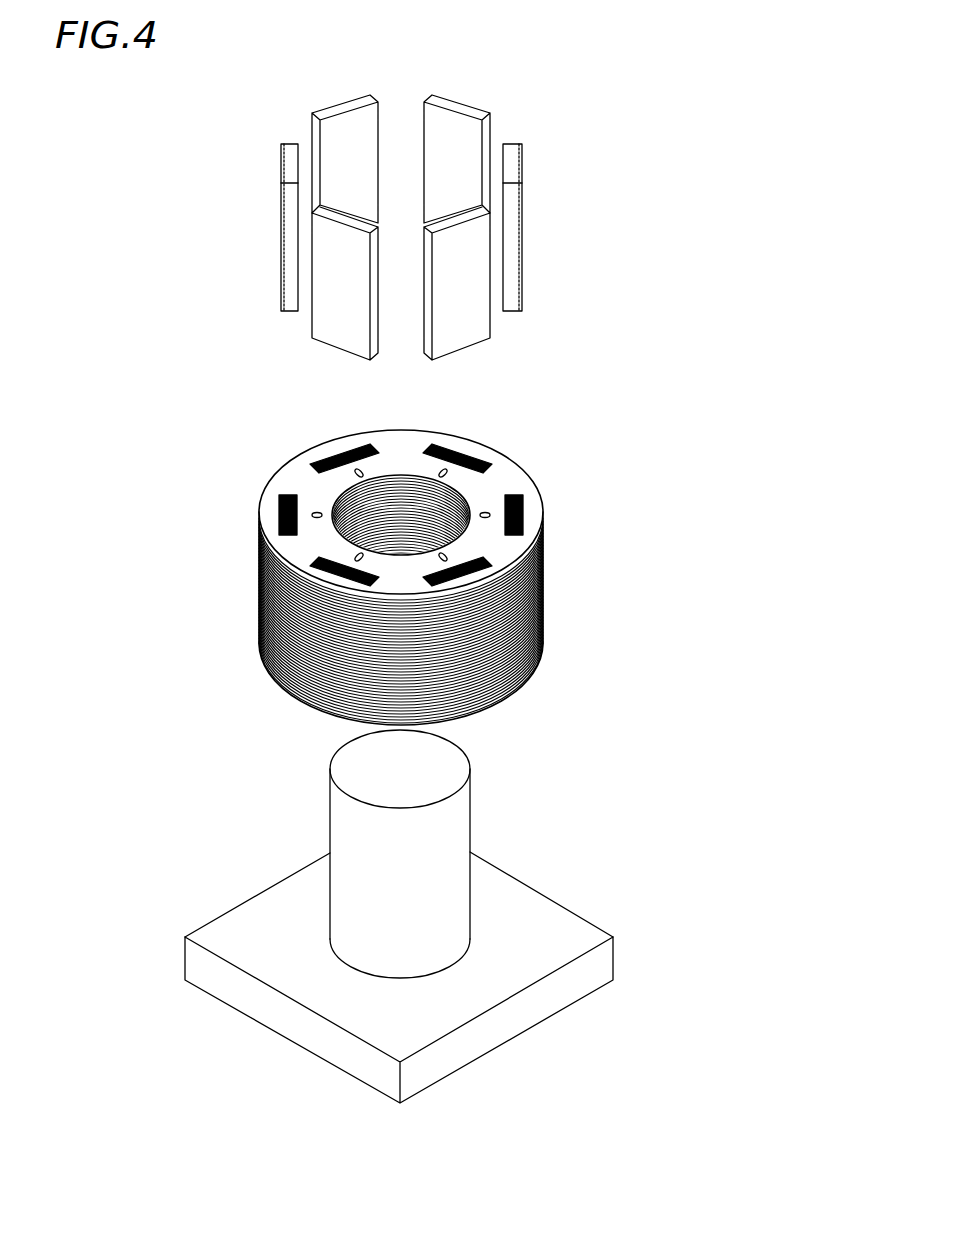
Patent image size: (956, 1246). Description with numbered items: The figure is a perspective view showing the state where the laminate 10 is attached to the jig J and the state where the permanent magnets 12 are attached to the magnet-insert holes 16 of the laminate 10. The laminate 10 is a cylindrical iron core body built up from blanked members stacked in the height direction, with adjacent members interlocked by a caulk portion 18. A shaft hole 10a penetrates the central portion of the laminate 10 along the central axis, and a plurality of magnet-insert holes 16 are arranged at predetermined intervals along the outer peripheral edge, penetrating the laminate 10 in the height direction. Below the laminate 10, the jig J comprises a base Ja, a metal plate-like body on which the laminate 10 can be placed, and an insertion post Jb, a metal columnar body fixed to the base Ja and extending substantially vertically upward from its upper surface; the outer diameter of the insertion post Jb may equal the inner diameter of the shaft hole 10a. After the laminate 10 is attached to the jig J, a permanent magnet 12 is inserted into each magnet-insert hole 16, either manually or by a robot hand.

The permanent magnet 12 is at (513, 148).
The laminate 10 is at (429, 554).
The shaft hole 10a is at (345, 490).
The magnet-insert hole 16 is at (447, 447).
The caulk portion 18 is at (486, 513).
The jig J is at (437, 916).
The base Ja is at (542, 905).
The insertion post Jb is at (459, 817).